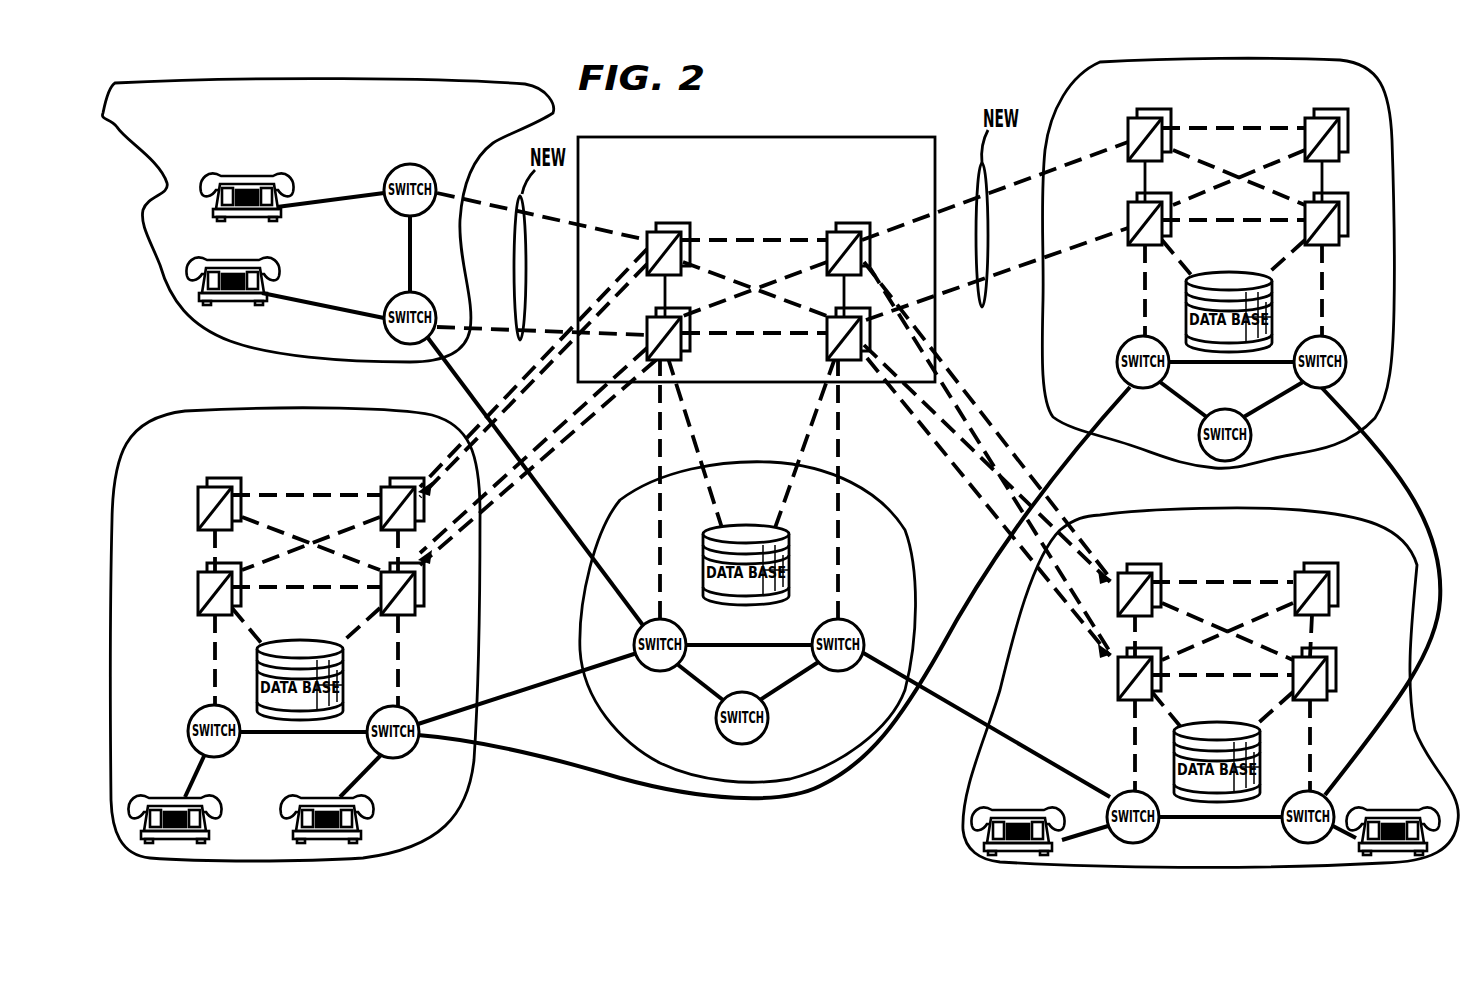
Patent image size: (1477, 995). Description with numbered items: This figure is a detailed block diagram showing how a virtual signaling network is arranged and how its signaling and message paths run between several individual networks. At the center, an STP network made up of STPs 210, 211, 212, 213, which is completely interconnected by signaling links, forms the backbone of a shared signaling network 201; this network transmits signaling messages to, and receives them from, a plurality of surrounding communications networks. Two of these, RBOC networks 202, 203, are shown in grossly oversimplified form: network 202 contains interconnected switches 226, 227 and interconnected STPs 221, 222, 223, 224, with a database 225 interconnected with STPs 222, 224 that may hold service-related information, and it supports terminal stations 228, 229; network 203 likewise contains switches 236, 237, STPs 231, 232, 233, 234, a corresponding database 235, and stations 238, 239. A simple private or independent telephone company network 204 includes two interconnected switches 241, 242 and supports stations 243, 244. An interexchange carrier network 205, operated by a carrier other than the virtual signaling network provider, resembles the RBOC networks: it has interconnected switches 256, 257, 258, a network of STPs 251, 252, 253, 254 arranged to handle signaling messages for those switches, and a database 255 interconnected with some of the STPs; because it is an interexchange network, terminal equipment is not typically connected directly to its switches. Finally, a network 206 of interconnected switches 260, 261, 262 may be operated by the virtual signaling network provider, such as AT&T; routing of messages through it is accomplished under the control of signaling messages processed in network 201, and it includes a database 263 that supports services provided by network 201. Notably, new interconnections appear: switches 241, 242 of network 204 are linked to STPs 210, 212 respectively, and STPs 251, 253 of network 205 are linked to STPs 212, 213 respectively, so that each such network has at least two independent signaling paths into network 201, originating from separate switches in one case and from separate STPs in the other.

The shared signaling network 201 is at (858, 137).
The RBOC communications network 202 is at (470, 784).
The RBOC communications network 203 is at (972, 776).
The private network 204 is at (142, 211).
The interexchange carrier network 205 is at (1383, 380).
The network of interconnected switches 206 is at (647, 737).
The STP 210 is at (672, 224).
The STP 211 is at (682, 352).
The STP 212 is at (849, 224).
The STP 213 is at (827, 350).
The STP 221 is at (220, 485).
The STP 222 is at (198, 587).
The STP 223 is at (403, 485).
The STP 224 is at (410, 615).
The database 225 is at (294, 640).
The switch 226 is at (205, 706).
The switch 227 is at (385, 708).
The station 228 is at (168, 798).
The station 229 is at (320, 798).
The STP 231 is at (1140, 570).
The STP 232 is at (1128, 700).
The STP 233 is at (1315, 570).
The STP 234 is at (1332, 672).
The database 235 is at (1215, 724).
The switch 236 is at (1158, 830).
The switch 237 is at (1296, 797).
The station 238 is at (1022, 808).
The station 239 is at (1388, 808).
The switch 241 is at (386, 178).
The switch 242 is at (396, 296).
The station 243 is at (286, 220).
The station 244 is at (282, 278).
The STP 251 is at (1150, 116).
The STP 252 is at (1128, 220).
The STP 253 is at (1326, 116).
The STP 254 is at (1340, 220).
The database 255 is at (1228, 272).
The switch 256 is at (1133, 338).
The switch 257 is at (1310, 338).
The switch 258 is at (1218, 412).
The switch 260 is at (648, 620).
The switch 261 is at (732, 694).
The switch 262 is at (828, 620).
The database 263 is at (748, 526).